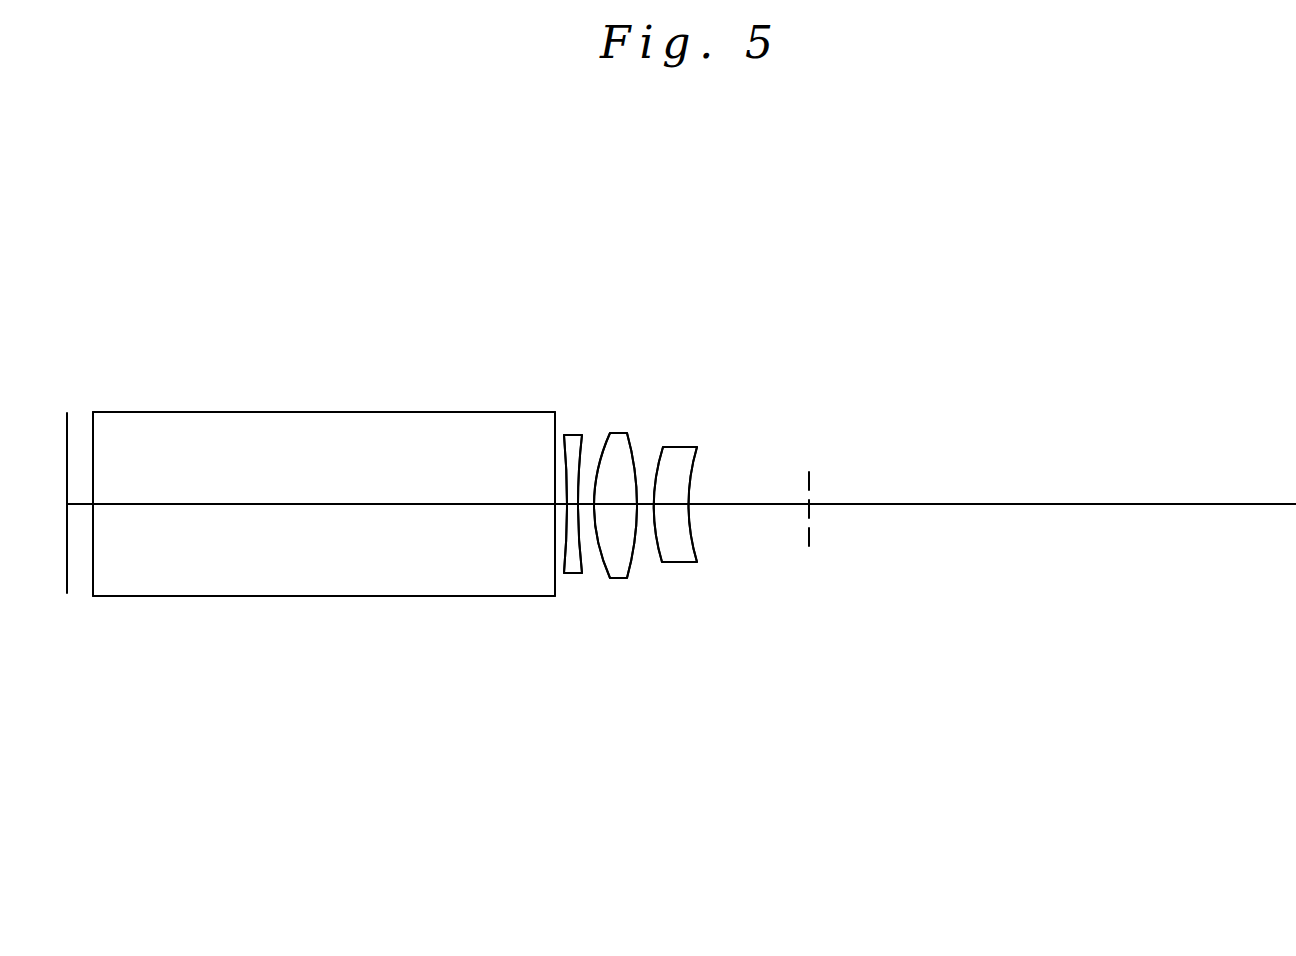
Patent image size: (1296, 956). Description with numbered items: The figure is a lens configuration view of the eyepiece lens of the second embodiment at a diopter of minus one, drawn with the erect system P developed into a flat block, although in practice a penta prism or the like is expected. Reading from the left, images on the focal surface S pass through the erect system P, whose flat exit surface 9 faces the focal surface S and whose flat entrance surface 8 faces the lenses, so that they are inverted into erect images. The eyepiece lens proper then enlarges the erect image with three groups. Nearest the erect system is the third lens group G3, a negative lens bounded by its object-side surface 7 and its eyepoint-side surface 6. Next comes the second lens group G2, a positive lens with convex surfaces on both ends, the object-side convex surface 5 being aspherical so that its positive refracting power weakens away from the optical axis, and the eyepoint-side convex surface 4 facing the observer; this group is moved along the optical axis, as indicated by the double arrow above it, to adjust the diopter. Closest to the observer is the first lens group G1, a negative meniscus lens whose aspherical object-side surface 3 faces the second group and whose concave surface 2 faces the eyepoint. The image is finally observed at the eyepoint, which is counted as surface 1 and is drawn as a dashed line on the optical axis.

The eyepoint surface 1 is at (809, 547).
The eyepoint-side surface of lens L1 2 is at (697, 547).
The object-side aspherical surface of lens L1 3 is at (660, 560).
The eyepoint-side convex surface of lens L2 4 is at (632, 565).
The object-side aspherical convex surface of lens L2 5 is at (606, 578).
The eyepoint-side surface of lens L3 6 is at (582, 568).
The object-side surface of lens L3 7 is at (565, 573).
The entrance surface of erect system 8 is at (558, 565).
The exit surface of erect system 9 is at (93, 577).
The focal surface S is at (68, 410).
The erect system P is at (368, 412).
The first lens group G1 is at (677, 447).
The second lens group G2 is at (612, 433).
The third lens group G3 is at (573, 433).